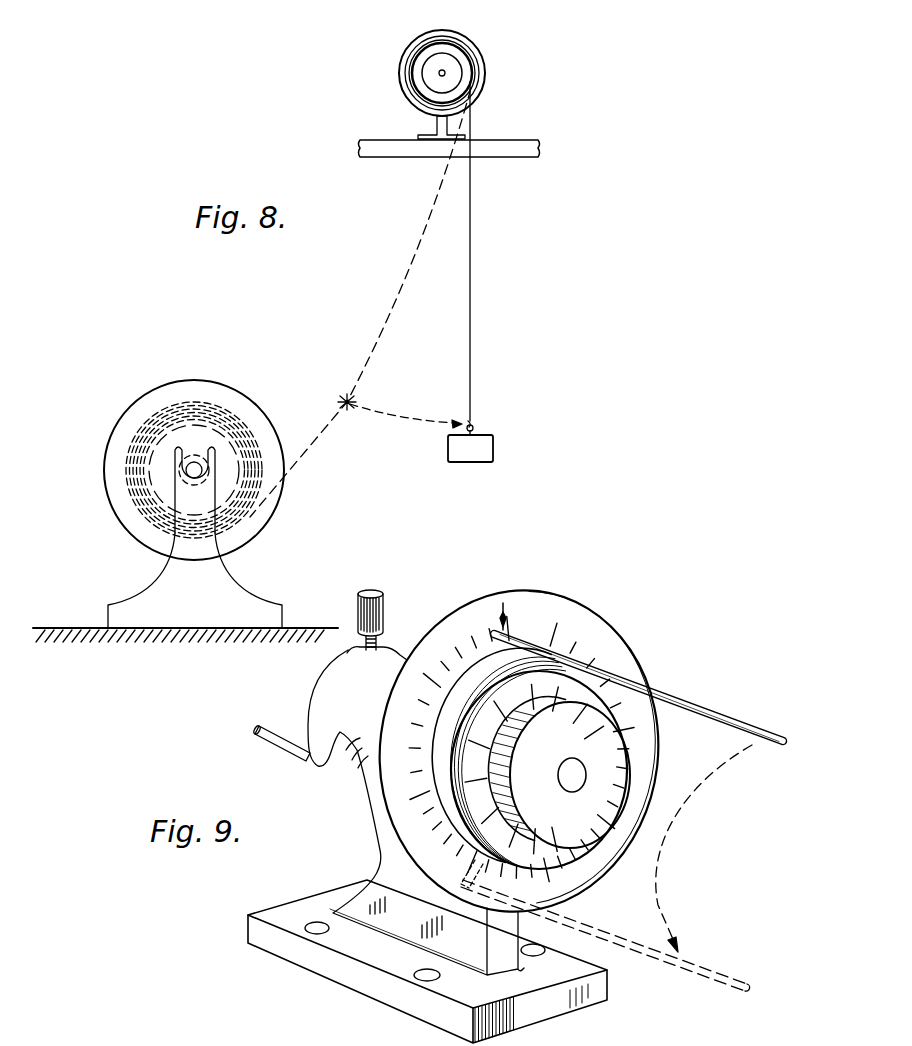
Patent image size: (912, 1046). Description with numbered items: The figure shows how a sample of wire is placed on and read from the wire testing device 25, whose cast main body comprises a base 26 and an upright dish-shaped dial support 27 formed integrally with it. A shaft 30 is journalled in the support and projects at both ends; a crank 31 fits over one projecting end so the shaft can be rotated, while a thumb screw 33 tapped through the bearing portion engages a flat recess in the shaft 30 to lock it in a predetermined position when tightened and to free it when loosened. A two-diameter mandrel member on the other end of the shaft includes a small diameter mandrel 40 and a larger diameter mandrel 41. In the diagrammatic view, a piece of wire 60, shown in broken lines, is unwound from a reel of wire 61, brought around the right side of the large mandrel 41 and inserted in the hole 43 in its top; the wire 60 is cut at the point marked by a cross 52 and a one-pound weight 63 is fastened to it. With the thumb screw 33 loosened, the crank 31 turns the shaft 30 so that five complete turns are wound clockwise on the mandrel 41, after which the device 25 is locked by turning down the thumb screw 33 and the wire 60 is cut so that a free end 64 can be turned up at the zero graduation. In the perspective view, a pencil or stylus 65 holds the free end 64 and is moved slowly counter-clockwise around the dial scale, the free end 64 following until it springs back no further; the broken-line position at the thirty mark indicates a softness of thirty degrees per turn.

In FIG. 8, the wire testing device 25 is at (489, 60).
In FIG. 9, the wire testing device 25 is at (626, 631).
In FIG. 8, the larger diameter mandrel 41 is at (413, 64).
In FIG. 9, the larger diameter mandrel 41 is at (447, 762).
In FIG. 8, the hole 43 is at (446, 56).
In FIG. 9, the hole 43 is at (539, 765).
In FIG. 8, the wire 60 is at (471, 255).
In FIG. 9, the wire 60 is at (433, 719).
In FIG. 8, the reel of wire 61 is at (221, 382).
In FIG. 8, the cord marker 52 is at (347, 399).
In FIG. 8, the one-pound weight 63 is at (494, 450).
In FIG. 9, the base 26 is at (348, 953).
In FIG. 9, the dial support 27 is at (503, 598).
In FIG. 9, the shaft 30 is at (574, 786).
In FIG. 9, the crank 31 is at (315, 755).
In FIG. 9, the thumb screw 33 is at (376, 608).
In FIG. 9, the small diameter mandrel 40 is at (530, 736).
In FIG. 9, the free end 64 is at (508, 626).
In FIG. 9, the stylus 65 is at (697, 712).